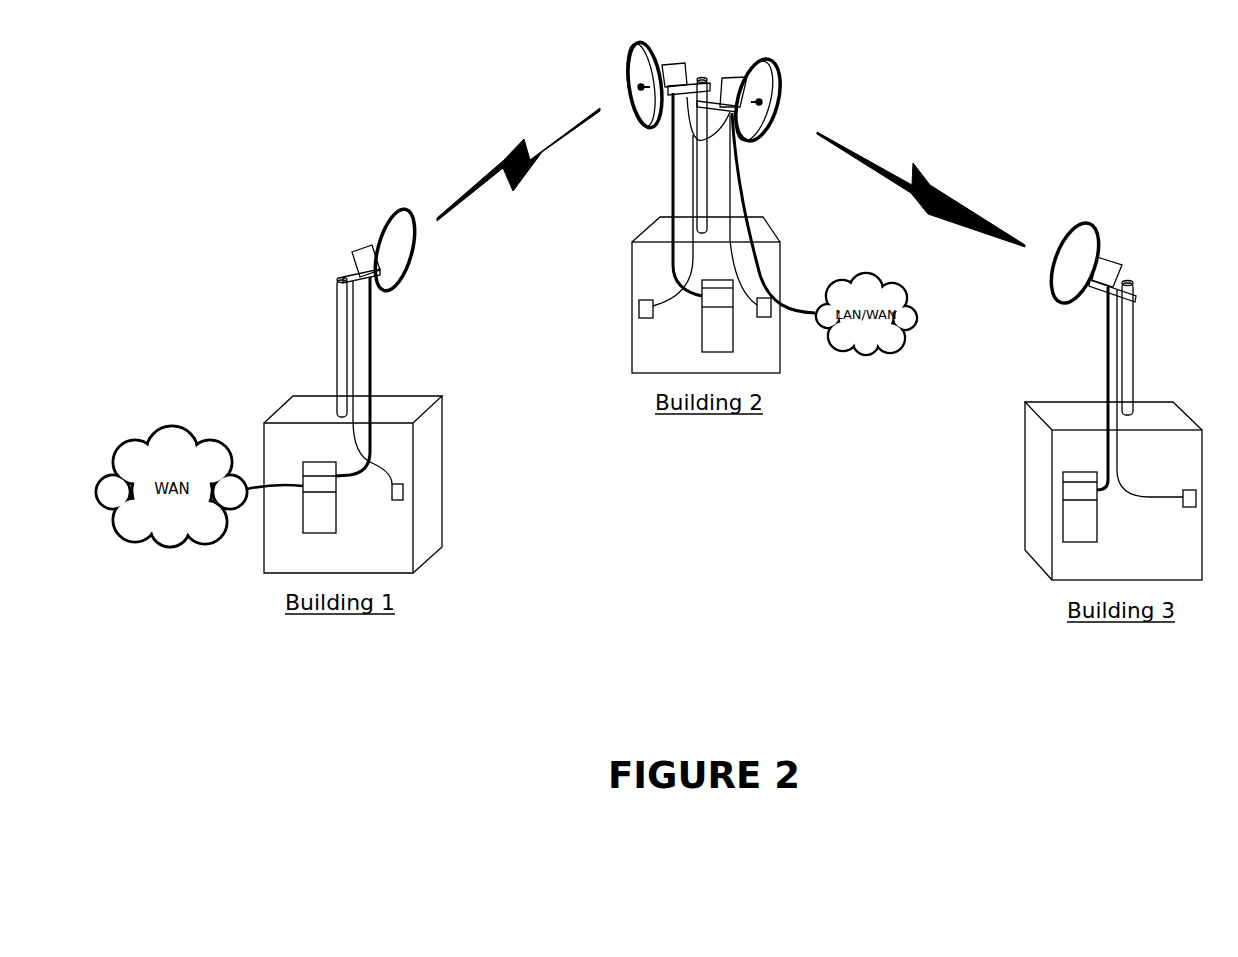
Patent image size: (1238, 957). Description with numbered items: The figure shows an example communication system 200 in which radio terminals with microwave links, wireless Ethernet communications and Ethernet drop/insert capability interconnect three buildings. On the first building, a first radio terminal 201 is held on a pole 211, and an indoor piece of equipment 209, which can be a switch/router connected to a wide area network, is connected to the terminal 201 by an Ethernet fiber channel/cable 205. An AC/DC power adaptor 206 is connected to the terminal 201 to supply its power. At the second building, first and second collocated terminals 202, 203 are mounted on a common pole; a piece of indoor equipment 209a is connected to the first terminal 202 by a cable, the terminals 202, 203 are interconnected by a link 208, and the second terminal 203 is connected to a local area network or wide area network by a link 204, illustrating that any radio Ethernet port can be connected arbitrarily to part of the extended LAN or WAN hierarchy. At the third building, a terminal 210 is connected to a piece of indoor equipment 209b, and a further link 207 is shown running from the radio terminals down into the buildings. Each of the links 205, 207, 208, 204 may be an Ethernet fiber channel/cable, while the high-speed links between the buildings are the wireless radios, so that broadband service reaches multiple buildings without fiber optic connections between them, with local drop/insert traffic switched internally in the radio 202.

The communication system 200 is at (299, 153).
The first radio terminal 201 is at (373, 208).
The second radio terminal 202 is at (630, 70).
The second collocated terminal 203 is at (778, 92).
The link 204 is at (740, 162).
The Ethernet fiber channel/cable 205 is at (370, 358).
The AC/DC power adaptor 206 is at (403, 492).
The link 207 is at (670, 135).
The link 208 is at (687, 128).
The indoor equipment 209 is at (323, 486).
The indoor equipment 209a is at (730, 335).
The indoor equipment 209b is at (1068, 515).
The terminal 210 is at (1083, 240).
The pole 211 is at (339, 359).